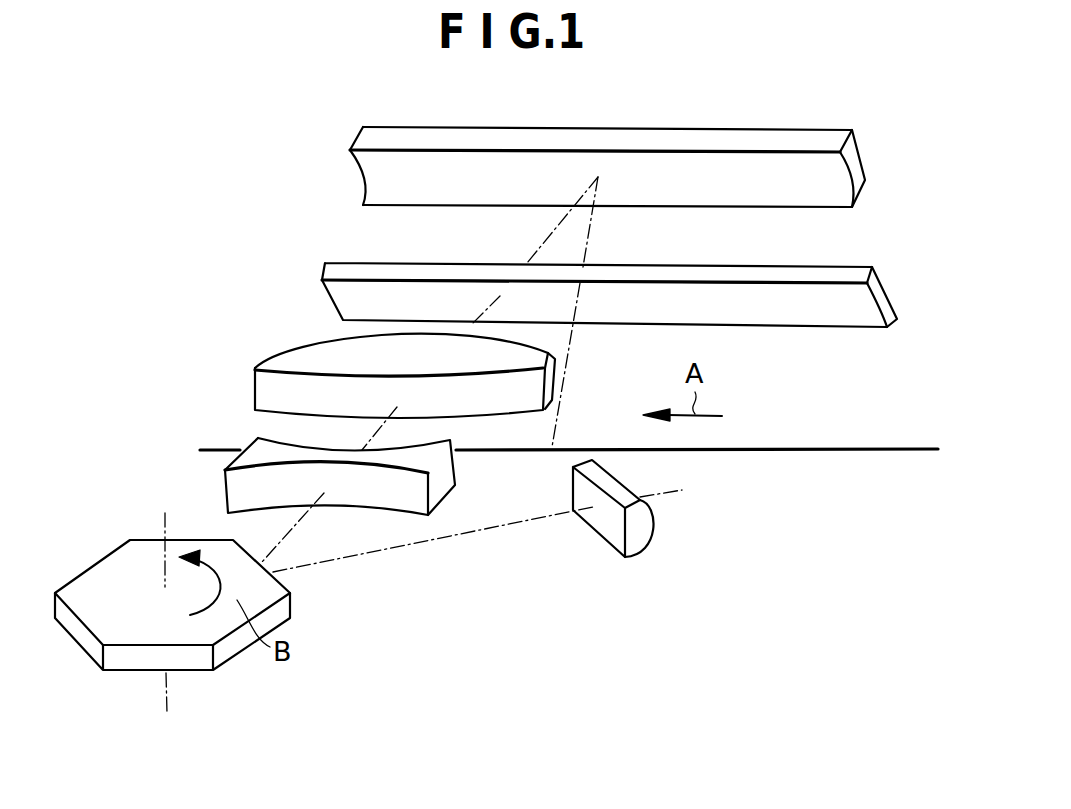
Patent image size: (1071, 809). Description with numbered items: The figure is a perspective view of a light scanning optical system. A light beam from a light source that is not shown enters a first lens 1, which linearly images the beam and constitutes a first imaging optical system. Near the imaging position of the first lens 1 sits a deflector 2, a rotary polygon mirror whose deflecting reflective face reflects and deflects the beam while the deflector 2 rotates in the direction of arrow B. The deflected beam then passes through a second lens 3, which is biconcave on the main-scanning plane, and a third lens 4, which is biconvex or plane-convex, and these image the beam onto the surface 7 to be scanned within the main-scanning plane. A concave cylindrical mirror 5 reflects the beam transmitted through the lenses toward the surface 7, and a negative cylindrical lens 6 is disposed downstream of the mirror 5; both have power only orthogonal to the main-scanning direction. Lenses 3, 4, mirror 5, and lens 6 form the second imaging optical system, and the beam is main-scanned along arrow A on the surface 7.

The first lens 1 is at (608, 532).
The deflector (rotary polygon mirror) 2 is at (270, 597).
The second lens 3 is at (238, 480).
The third lens 4 is at (282, 360).
The concave cylindrical mirror 5 is at (802, 135).
The negative cylindrical lens 6 is at (825, 272).
The surface to be scanned 7 is at (848, 448).